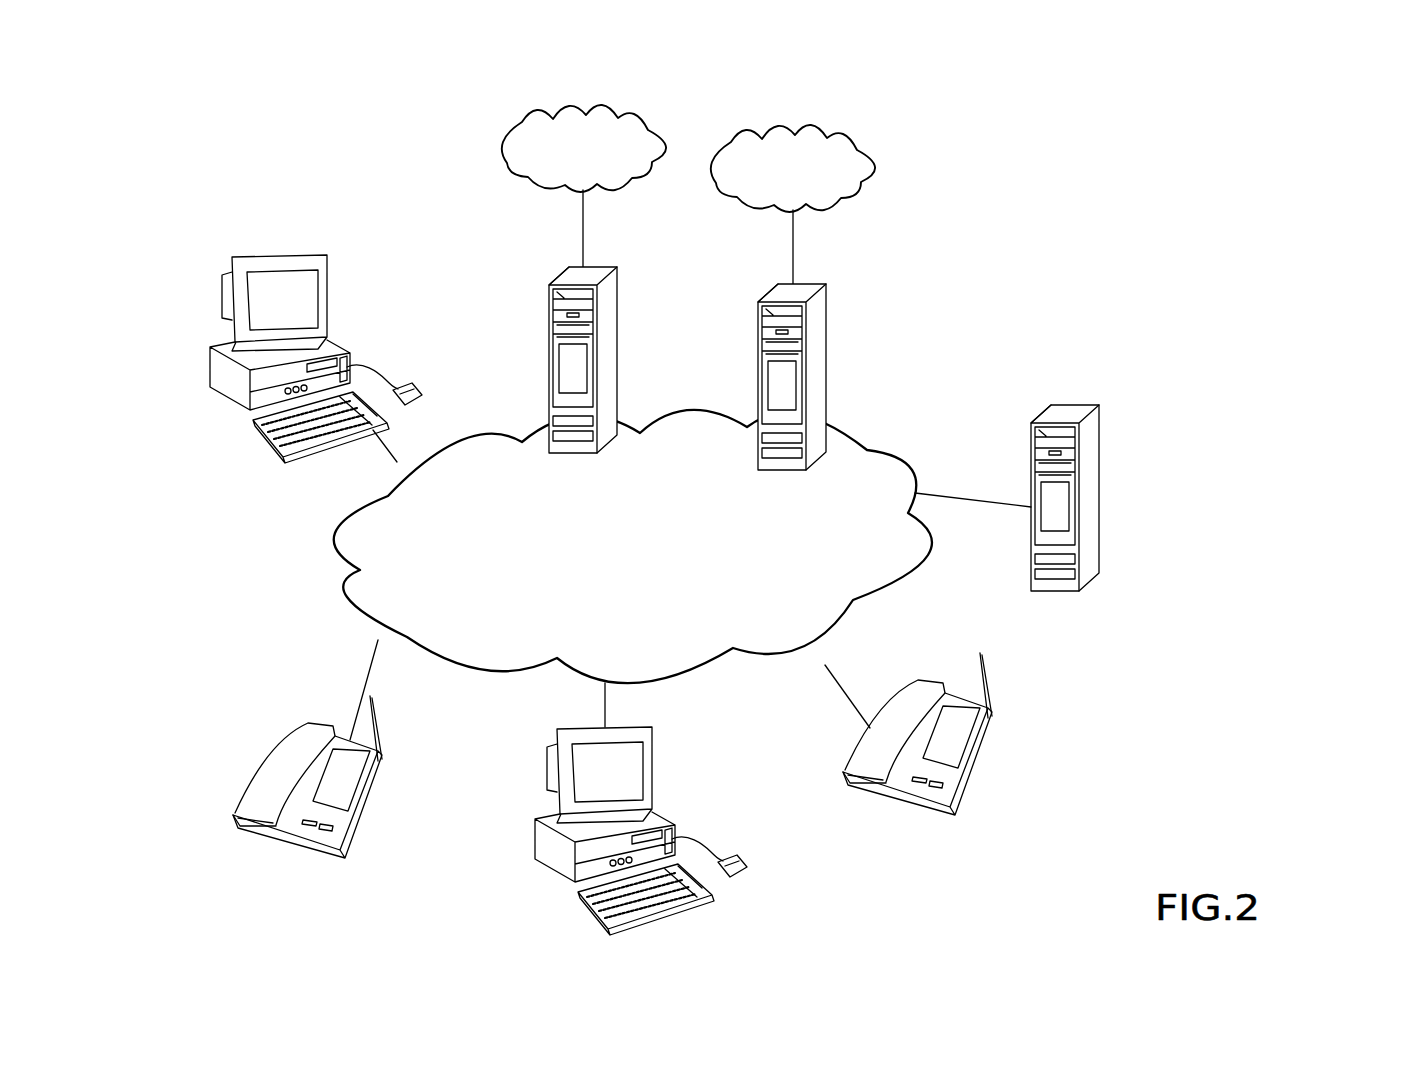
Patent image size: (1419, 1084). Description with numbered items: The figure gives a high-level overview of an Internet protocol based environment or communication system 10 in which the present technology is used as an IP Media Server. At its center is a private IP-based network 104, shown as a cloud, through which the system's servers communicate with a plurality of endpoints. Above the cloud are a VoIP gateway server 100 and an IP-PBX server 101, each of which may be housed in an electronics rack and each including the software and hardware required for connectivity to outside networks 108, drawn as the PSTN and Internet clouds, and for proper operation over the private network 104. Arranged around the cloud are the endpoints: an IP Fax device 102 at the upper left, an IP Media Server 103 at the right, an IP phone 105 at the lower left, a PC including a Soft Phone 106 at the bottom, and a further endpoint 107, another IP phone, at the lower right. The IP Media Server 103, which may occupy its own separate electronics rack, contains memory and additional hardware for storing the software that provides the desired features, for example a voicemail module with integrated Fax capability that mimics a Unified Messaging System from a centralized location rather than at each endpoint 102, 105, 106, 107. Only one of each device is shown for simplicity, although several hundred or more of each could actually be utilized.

The communication system 10 is at (984, 184).
The VoIP gateway server 100 is at (548, 357).
The IP-PBX server 101 is at (758, 345).
The IP Fax device 102 is at (227, 397).
The IP Media Server 103 is at (1102, 440).
The private IP-based network 104 is at (340, 550).
The IP phone 105 is at (270, 765).
The PC including a Soft Phone 106 is at (548, 770).
The endpoint 107 is at (977, 762).
The networks 108 is at (523, 122).